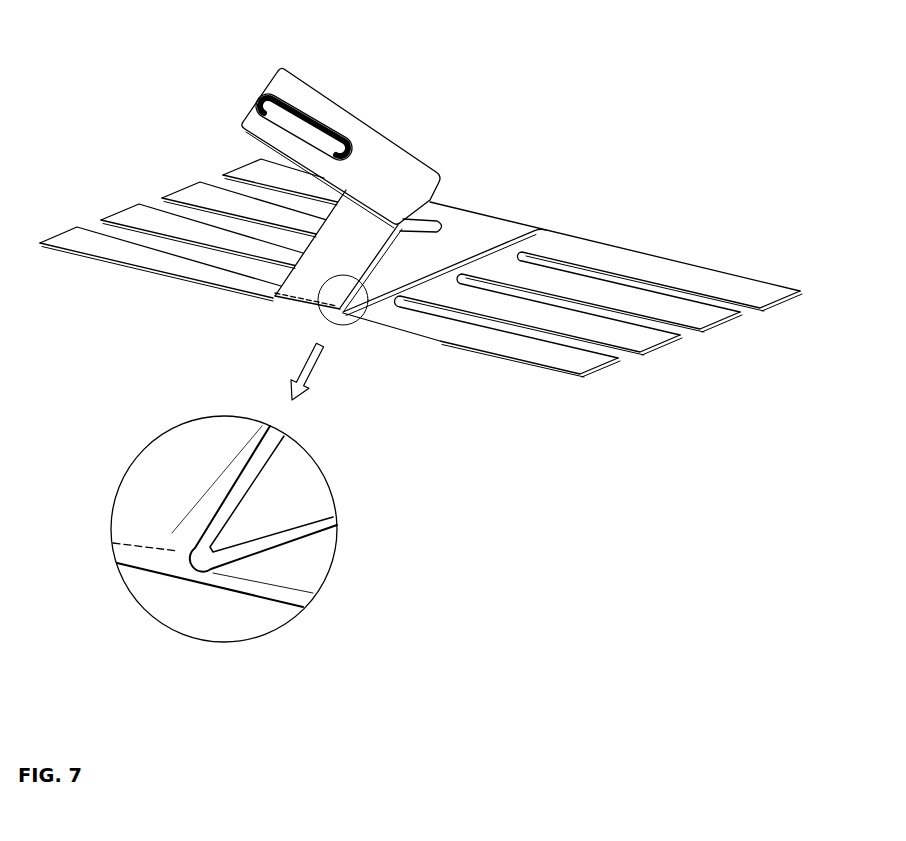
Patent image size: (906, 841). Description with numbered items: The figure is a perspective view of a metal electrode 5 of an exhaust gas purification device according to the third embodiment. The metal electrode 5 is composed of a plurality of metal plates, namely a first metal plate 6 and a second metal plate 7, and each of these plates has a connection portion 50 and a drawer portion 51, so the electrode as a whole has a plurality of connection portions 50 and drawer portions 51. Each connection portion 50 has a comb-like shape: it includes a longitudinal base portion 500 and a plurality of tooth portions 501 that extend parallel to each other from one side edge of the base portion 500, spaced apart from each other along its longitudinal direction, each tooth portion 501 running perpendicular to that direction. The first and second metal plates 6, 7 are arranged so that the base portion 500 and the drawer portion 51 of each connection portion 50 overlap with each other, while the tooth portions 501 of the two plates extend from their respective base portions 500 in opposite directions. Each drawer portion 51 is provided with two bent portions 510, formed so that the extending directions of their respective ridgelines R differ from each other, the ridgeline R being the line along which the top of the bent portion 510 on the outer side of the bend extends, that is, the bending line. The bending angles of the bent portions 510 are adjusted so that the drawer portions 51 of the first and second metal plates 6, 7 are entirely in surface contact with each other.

The metal electrode 5 is at (618, 235).
The connection portion 50 is at (535, 219).
The base portion 500 is at (490, 238).
The tooth portion 501 is at (197, 193).
The drawer portion 51 is at (352, 85).
The bent portion 510 is at (441, 190).
The first metal plate 6 is at (158, 262).
The second metal plate 7 is at (472, 338).
The ridgeline R is at (425, 196).